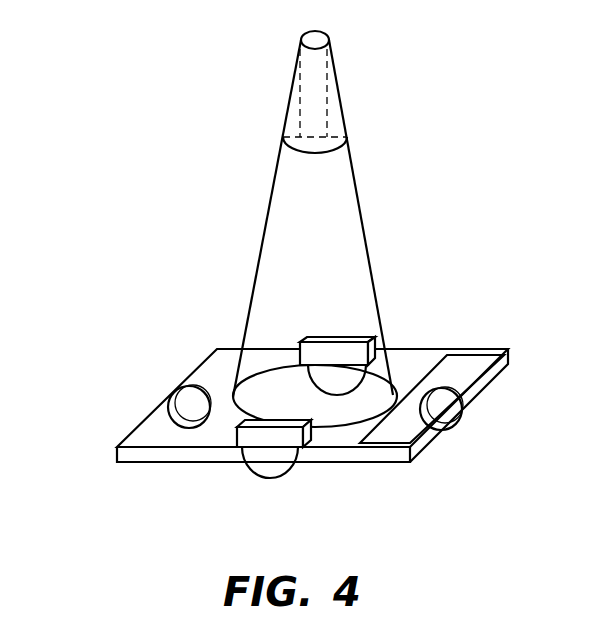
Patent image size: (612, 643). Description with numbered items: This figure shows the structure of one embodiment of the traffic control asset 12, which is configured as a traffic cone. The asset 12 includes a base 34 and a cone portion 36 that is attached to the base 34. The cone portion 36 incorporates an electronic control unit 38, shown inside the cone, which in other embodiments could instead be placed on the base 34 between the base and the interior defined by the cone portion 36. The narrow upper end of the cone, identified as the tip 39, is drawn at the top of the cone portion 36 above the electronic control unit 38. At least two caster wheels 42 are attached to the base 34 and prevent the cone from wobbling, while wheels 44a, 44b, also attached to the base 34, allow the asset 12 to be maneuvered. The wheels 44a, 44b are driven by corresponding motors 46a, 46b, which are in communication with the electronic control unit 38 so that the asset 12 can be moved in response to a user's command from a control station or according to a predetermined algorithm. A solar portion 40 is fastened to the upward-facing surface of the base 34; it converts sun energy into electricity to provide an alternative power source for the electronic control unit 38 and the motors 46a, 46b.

The traffic control asset 12 is at (118, 287).
The base 34 is at (141, 440).
The cone portion 36 is at (273, 218).
The electronic control unit 38 is at (327, 117).
The beam tip aperture 39 is at (307, 63).
The solar portion 40 is at (496, 373).
The caster wheels 42 is at (178, 398).
The wheel 44a is at (270, 468).
The wheel 44b is at (368, 380).
The motor 46a is at (242, 437).
The motor 46b is at (355, 334).